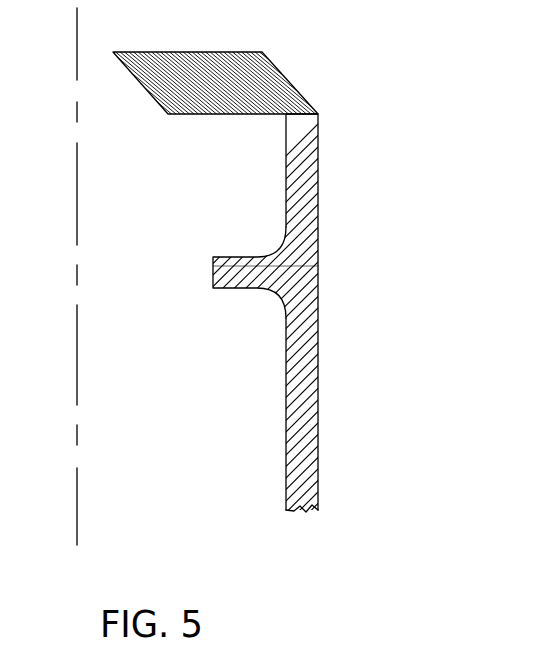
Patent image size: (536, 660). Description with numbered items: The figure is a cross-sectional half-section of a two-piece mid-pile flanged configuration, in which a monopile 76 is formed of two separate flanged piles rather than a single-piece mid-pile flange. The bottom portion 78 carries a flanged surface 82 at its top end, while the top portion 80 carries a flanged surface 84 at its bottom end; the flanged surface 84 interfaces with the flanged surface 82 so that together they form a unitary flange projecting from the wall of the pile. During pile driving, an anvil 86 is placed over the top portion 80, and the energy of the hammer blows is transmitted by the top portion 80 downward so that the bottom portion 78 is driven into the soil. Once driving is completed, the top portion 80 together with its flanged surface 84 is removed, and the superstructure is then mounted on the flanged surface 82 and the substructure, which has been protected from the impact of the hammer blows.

The monopile 76 is at (234, 328).
The bottom portion 78 is at (301, 367).
The top portion 80 is at (285, 197).
The flanged surface 82 is at (225, 264).
The flanged surface 84 is at (237, 257).
The anvil 86 is at (270, 85).